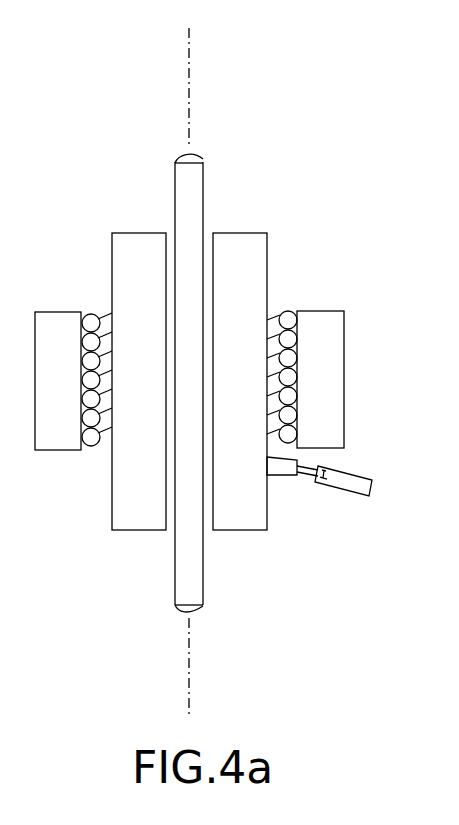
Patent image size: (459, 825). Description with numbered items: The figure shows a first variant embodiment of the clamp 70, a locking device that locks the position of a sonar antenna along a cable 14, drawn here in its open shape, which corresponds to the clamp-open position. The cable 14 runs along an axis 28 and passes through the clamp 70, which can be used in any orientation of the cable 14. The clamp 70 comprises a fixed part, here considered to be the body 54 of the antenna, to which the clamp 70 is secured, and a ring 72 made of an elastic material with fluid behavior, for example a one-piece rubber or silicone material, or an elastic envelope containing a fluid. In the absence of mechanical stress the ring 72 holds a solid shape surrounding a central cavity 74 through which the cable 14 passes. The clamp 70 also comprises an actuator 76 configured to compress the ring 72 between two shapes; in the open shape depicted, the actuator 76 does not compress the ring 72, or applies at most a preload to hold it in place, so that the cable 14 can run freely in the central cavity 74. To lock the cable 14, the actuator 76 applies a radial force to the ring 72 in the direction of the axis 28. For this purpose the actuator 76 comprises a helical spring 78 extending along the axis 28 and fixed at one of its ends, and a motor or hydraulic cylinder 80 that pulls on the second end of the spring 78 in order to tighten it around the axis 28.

The cable 14 is at (203, 181).
The axis 28 is at (189, 88).
The body 54 is at (55, 445).
The clamp 70 is at (382, 121).
The ring 72 is at (247, 268).
The central cavity 74 is at (208, 226).
The actuator 76 is at (346, 531).
The helical spring 78 is at (285, 452).
The hydraulic cylinder 80 is at (343, 495).